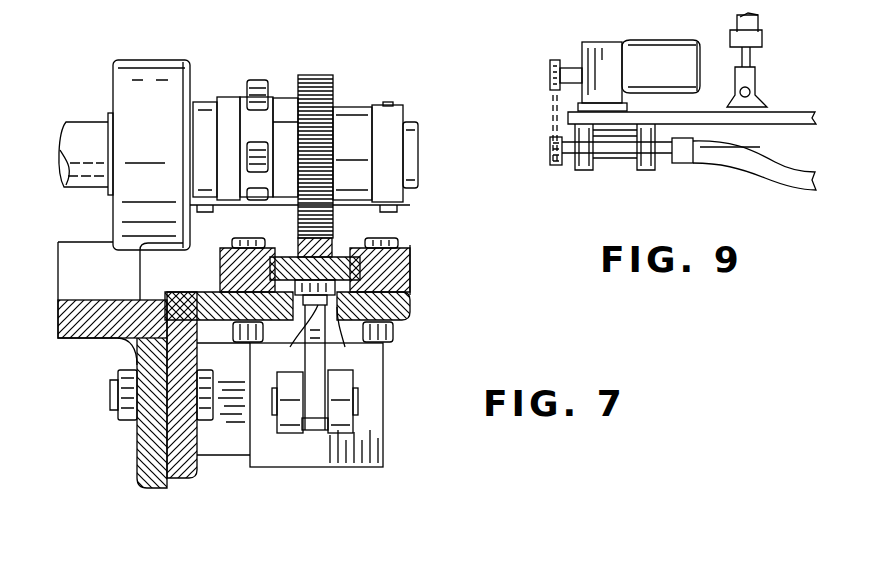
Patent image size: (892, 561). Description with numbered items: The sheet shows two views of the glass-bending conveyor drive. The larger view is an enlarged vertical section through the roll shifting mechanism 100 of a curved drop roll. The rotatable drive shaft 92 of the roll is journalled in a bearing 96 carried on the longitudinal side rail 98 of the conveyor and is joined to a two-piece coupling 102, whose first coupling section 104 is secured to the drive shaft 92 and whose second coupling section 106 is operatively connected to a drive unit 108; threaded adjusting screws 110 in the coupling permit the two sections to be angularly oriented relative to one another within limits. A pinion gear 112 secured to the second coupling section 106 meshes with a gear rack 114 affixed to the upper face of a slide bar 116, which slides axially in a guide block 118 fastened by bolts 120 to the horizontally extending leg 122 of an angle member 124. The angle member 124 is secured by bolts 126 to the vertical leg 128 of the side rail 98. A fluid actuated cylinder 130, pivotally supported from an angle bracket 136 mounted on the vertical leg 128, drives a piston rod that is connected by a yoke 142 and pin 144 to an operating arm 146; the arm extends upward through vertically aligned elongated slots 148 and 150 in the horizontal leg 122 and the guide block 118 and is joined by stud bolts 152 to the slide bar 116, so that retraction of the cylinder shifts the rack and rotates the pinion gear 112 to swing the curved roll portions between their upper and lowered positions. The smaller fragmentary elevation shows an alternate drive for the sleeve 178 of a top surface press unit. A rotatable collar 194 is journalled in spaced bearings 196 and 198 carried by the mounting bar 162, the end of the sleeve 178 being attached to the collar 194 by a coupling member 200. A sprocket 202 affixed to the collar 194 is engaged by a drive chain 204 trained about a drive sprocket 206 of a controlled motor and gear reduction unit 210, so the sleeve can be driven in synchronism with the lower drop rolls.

In FIG. 7, the drive shaft 92 is at (77, 128).
In FIG. 7, the bearing 96 is at (125, 62).
In FIG. 7, the longitudinal side rail 98 is at (65, 313).
In FIG. 7, the roll shifting mechanism 100 is at (436, 92).
In FIG. 7, the two-piece coupling 102 is at (322, 65).
In FIG. 7, the first coupling section 104 is at (224, 97).
In FIG. 7, the second coupling section 106 is at (350, 113).
In FIG. 7, the drive unit 108 is at (432, 235).
In FIG. 7, the threaded adjusting screws 110 is at (255, 160).
In FIG. 7, the pinion gear 112 is at (308, 85).
In FIG. 7, the gear rack 114 is at (303, 242).
In FIG. 7, the slide bar 116 is at (390, 253).
In FIG. 7, the guide block 118 is at (407, 265).
In FIG. 7, the bolts 120 is at (230, 245).
In FIG. 7, the horizontally extending leg 122 is at (397, 302).
In FIG. 7, the angle member 124 is at (183, 468).
In FIG. 7, the bolts 126 is at (110, 395).
In FIG. 7, the vertical leg 128 is at (143, 468).
In FIG. 7, the fluid actuated cylinder 130 is at (373, 442).
In FIG. 7, the angle bracket 136 is at (227, 443).
In FIG. 7, the yoke 142 is at (347, 378).
In FIG. 7, the pin 144 is at (357, 405).
In FIG. 7, the operating arm 146 is at (315, 425).
In FIG. 7, the elongated slot 148 is at (356, 337).
In FIG. 7, the elongated slot 150 is at (327, 275).
In FIG. 7, the stud bolts 152 is at (287, 335).
In FIG. 9, the mounting bar 162 is at (790, 112).
In FIG. 9, the sleeve 178 is at (802, 180).
In FIG. 9, the rotatable collar 194 is at (612, 155).
In FIG. 9, the bearing 196 is at (645, 172).
In FIG. 9, the bearing 198 is at (575, 172).
In FIG. 9, the coupling member 200 is at (685, 165).
In FIG. 9, the sprocket 202 is at (553, 165).
In FIG. 9, the drive chain 204 is at (549, 108).
In FIG. 9, the drive sprocket 206 is at (555, 62).
In FIG. 9, the motor and gear reduction unit 210 is at (668, 47).